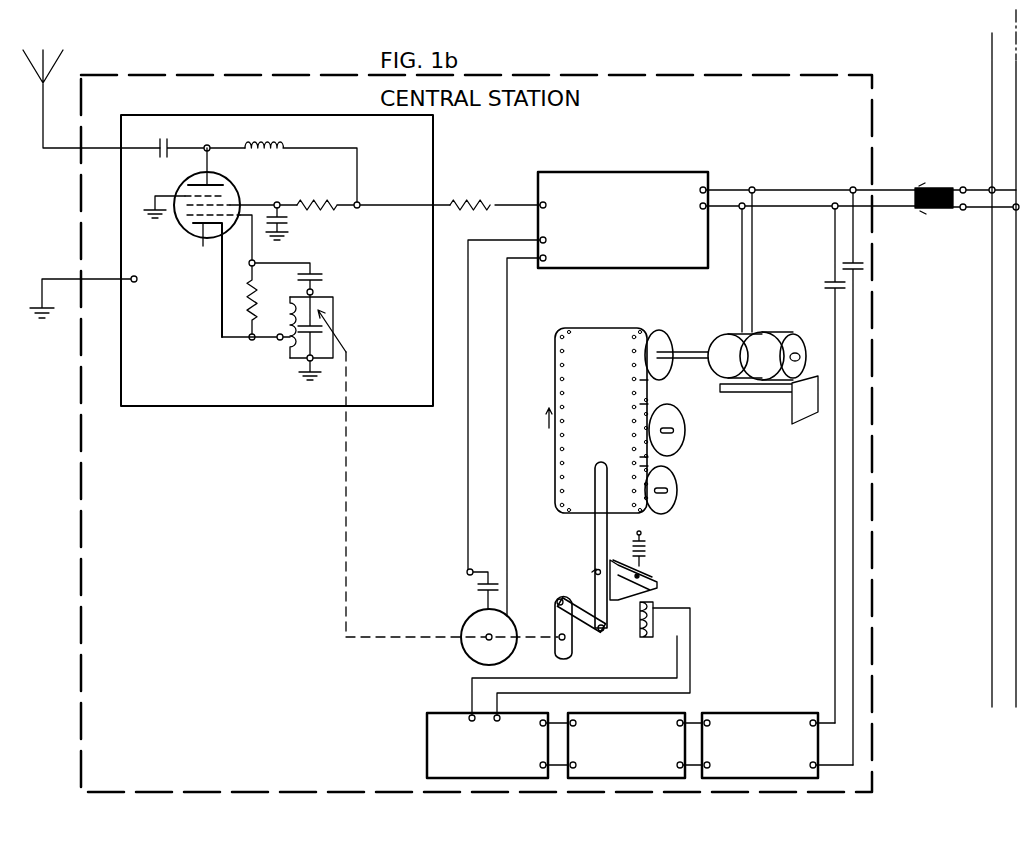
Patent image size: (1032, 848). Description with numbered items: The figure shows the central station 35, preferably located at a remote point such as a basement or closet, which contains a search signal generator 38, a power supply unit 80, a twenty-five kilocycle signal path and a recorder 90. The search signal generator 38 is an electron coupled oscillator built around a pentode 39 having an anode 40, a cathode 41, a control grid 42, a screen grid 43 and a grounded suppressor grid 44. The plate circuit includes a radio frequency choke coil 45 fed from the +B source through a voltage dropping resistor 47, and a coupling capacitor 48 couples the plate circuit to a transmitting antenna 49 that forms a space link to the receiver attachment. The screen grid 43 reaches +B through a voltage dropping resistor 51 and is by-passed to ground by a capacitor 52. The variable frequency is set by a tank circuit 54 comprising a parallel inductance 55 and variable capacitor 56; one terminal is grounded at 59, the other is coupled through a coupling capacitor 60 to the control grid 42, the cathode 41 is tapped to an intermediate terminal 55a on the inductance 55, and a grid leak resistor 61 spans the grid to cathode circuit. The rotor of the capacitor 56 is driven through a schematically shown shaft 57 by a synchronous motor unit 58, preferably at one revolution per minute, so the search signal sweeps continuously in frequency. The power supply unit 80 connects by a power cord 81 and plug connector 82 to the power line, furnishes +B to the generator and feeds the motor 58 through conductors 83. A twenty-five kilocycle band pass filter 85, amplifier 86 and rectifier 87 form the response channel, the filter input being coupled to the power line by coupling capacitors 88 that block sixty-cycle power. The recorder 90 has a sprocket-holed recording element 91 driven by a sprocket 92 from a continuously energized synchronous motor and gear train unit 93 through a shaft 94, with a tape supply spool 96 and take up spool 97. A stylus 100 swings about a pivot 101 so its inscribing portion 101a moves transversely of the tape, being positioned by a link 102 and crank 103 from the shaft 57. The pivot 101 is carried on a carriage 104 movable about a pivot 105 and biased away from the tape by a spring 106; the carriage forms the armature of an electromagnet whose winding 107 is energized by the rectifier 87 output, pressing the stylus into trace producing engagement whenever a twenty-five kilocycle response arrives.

The central station 35 is at (182, 80).
The search signal generator 38 is at (174, 114).
The pentode 39 is at (193, 228).
The anode 40 is at (222, 180).
The cathode 41 is at (204, 236).
The control grid 42 is at (186, 222).
The screen grid 43 is at (234, 206).
The suppressor grid 44 is at (190, 196).
The radio frequency choke coil 45 is at (283, 147).
The voltage dropping resistor 47 is at (478, 180).
The coupling capacitor 48 is at (170, 146).
The antenna 49 is at (56, 152).
The voltage dropping resistor 51 is at (302, 199).
The by-pass capacitor 52 is at (289, 233).
The tank circuit 54 is at (318, 306).
The inductance 55 is at (282, 345).
The intermediate terminal 55a is at (276, 326).
The variable capacitor 56 is at (343, 326).
The shaft 57 is at (353, 625).
The synchronous motor unit 58 is at (466, 630).
The ground 59 is at (305, 376).
The coupling capacitor 60 is at (320, 277).
The grid leak resistor 61 is at (247, 296).
The power supply unit 80 is at (588, 176).
The power cord 81 is at (862, 183).
The plug connector 82 is at (932, 181).
The conductors 83 is at (427, 505).
The 25 kc. band pass filter 85 is at (733, 720).
The amplifier 86 is at (617, 714).
The rectifier 87 is at (447, 722).
The coupling capacitors 88 is at (838, 278).
The recorder 90 is at (752, 447).
The recording element 91 is at (572, 372).
The sprocket 92 is at (674, 340).
The synchronous motor and gear train unit 93 is at (768, 330).
The shaft 94 is at (692, 360).
The tape supply spool 96 is at (674, 498).
The take up spool 97 is at (678, 450).
The stylus 100 is at (579, 524).
The pivot 101 is at (594, 569).
The inscribing portion 101a is at (610, 465).
The link 102 is at (575, 600).
The crank 103 is at (555, 622).
The carriage 104 is at (652, 590).
The pivot 105 is at (646, 576).
The spring 106 is at (645, 537).
The winding 107 is at (660, 605).